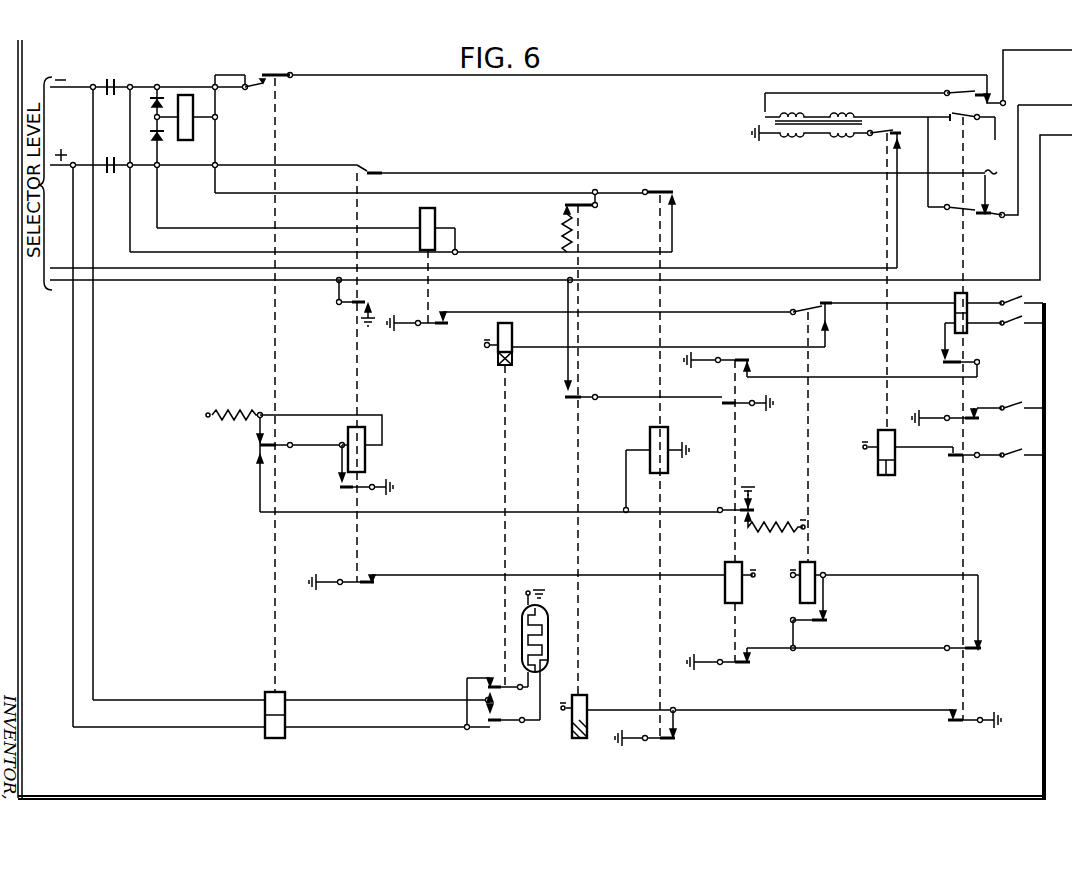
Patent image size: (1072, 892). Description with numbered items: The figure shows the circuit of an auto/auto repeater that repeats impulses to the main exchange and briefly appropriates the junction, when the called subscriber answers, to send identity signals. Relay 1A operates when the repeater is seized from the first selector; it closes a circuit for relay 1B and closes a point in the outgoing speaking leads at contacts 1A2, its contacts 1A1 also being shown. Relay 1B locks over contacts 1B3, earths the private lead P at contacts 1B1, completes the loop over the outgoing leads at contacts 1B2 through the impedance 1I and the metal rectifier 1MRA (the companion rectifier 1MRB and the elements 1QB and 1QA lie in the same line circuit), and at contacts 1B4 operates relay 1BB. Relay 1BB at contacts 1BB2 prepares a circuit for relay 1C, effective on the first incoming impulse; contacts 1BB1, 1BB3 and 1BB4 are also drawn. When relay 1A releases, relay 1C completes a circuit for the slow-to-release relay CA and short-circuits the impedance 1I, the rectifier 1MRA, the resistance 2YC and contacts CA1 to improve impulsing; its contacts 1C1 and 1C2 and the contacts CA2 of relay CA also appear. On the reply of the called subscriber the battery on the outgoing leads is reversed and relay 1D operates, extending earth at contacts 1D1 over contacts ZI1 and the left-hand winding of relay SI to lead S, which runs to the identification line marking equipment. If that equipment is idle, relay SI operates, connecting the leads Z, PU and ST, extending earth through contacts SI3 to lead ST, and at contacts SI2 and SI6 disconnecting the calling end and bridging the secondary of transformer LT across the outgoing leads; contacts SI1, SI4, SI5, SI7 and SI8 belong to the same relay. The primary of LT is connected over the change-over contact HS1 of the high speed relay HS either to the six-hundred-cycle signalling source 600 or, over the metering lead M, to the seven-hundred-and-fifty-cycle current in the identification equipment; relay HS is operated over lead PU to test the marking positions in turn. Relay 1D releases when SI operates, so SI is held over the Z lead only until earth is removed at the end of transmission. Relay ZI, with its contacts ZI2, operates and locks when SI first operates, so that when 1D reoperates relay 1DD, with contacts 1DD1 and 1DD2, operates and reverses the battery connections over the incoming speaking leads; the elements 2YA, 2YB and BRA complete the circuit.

The metering lead M is at (473, 257).
The private lead P is at (561, 218).
The capacitor 1QB is at (120, 76).
The capacitor 1QA is at (120, 154).
The metal rectifier 1MRA is at (147, 90).
The rectifier 1MRB is at (163, 146).
The impedance 1I is at (209, 112).
The contact of relay 1A 1A2 is at (266, 58).
The contacts of relay 1B 1B2 is at (358, 150).
The relay 1D is at (435, 222).
The resistance 2YC is at (563, 233).
The contacts of relay CA CA1 is at (589, 210).
The contact of relay 1C 1C1 is at (674, 194).
The transformer LT is at (755, 110).
The contacts of relay SI SI2 is at (945, 97).
The change-over contact of relay HS HS1 is at (873, 145).
The contact of relay SI SI4 is at (967, 128).
The source of signalling current 600 is at (994, 165).
The contacts of relay SI SI6 is at (951, 216).
The contact of relay 1B 1B1 is at (368, 302).
The contacts of relay 1D 1D1 is at (441, 332).
The relay 1DD is at (512, 338).
The contacts of relay ZI ZI1 is at (796, 316).
The relay SI is at (955, 323).
The lead S is at (1036, 297).
The lead Z is at (1031, 318).
The contact of relay SI SI5 is at (970, 358).
The contact of relay 1BB 1BB1 is at (750, 360).
The contact of relay CA CA2 is at (584, 398).
The contact of relay 1BB 1BB4 is at (724, 406).
The relay 1C is at (668, 466).
The contact of relay 1A 1A1 is at (282, 444).
The resistor 2YA is at (236, 404).
The relay 1B is at (366, 458).
The contact of relay 1B 1B3 is at (342, 490).
The contacts of relay 1B 1B4 is at (366, 590).
The relay 1BB is at (722, 588).
The relay ZI is at (818, 576).
The contact of relay ZI ZI2 is at (825, 626).
The contact of relay SI SI8 is at (975, 654).
The contact of relay 1BB 1BB3 is at (745, 668).
The relay 1A is at (288, 718).
The contact of relay 1DD 1DD1 is at (493, 678).
The contact of relay 1DD 1DD2 is at (503, 735).
The glow tube BRA is at (542, 668).
The slow-to-release relay CA is at (587, 708).
The contact of relay 1C 1C2 is at (671, 742).
The contact of relay SI SI1 is at (965, 724).
The contacts of relay SI SI3 is at (968, 423).
The lead ST is at (1041, 406).
The high speed relay HS is at (895, 460).
The contact of relay SI SI7 is at (973, 462).
The lead PU is at (1041, 453).
The contacts of relay 1BB 1BB2 is at (720, 516).
The resistor 2YB is at (782, 523).